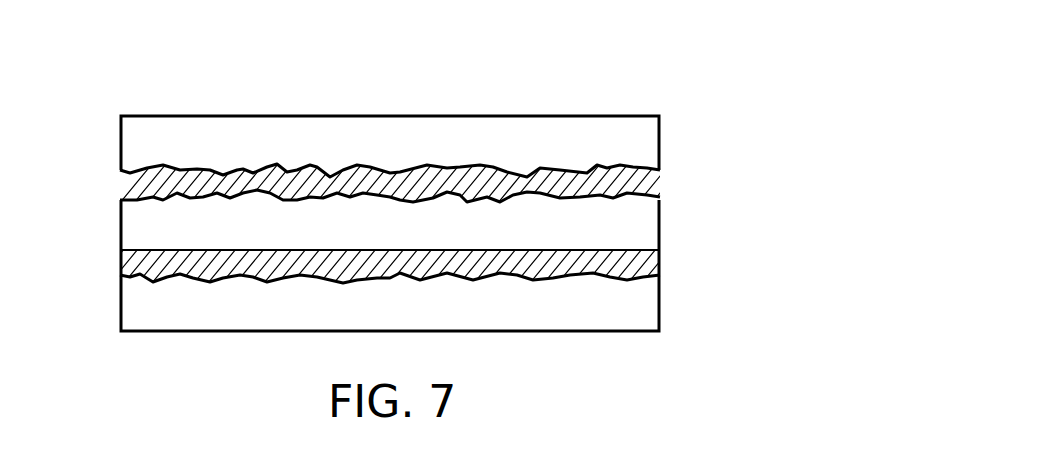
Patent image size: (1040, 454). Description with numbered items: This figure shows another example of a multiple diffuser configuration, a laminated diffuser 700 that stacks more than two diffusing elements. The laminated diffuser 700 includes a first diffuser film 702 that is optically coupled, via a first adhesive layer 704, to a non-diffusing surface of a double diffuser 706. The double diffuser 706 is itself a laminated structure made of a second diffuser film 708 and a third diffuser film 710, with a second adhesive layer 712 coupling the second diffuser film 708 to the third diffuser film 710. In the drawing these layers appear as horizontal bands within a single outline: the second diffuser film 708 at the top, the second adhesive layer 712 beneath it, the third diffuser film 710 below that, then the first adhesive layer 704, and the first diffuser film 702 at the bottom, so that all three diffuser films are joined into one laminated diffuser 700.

The laminated diffuser 700 is at (431, 182).
The first diffuser film 702 is at (651, 317).
The first adhesive layer 704 is at (651, 263).
The double diffuser 706 is at (431, 203).
The second diffuser film 708 is at (651, 143).
The third diffuser film 710 is at (651, 230).
The second adhesive layer 712 is at (129, 193).